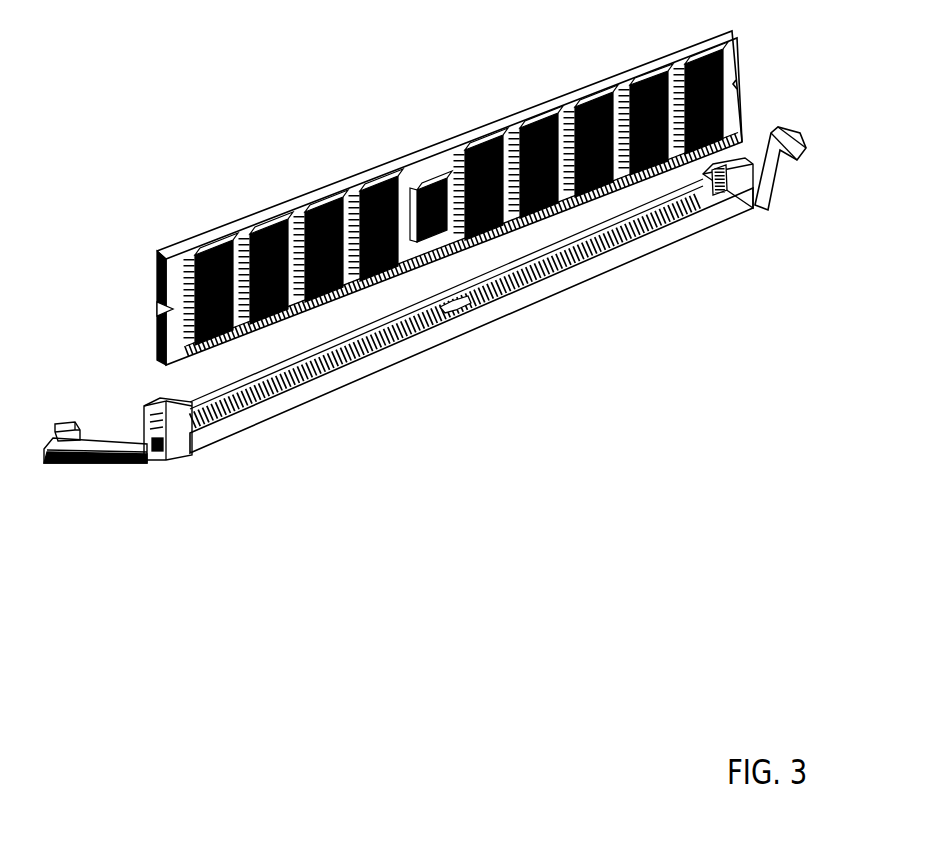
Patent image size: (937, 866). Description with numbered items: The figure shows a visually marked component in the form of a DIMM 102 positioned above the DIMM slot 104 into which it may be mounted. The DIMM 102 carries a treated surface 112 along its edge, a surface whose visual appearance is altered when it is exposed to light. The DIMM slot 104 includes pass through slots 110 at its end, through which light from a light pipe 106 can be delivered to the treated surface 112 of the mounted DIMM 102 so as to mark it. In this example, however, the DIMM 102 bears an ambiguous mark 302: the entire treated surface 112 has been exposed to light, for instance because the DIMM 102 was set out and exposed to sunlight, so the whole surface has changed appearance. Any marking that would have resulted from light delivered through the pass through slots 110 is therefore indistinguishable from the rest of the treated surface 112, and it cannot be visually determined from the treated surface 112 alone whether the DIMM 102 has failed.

The DIMM 102 is at (318, 192).
The DIMM slot 104 is at (507, 316).
The light pipe 106 is at (58, 417).
The pass through slots 110 is at (178, 418).
The treated surface 112 is at (158, 253).
The ambiguous mark 302 is at (148, 253).